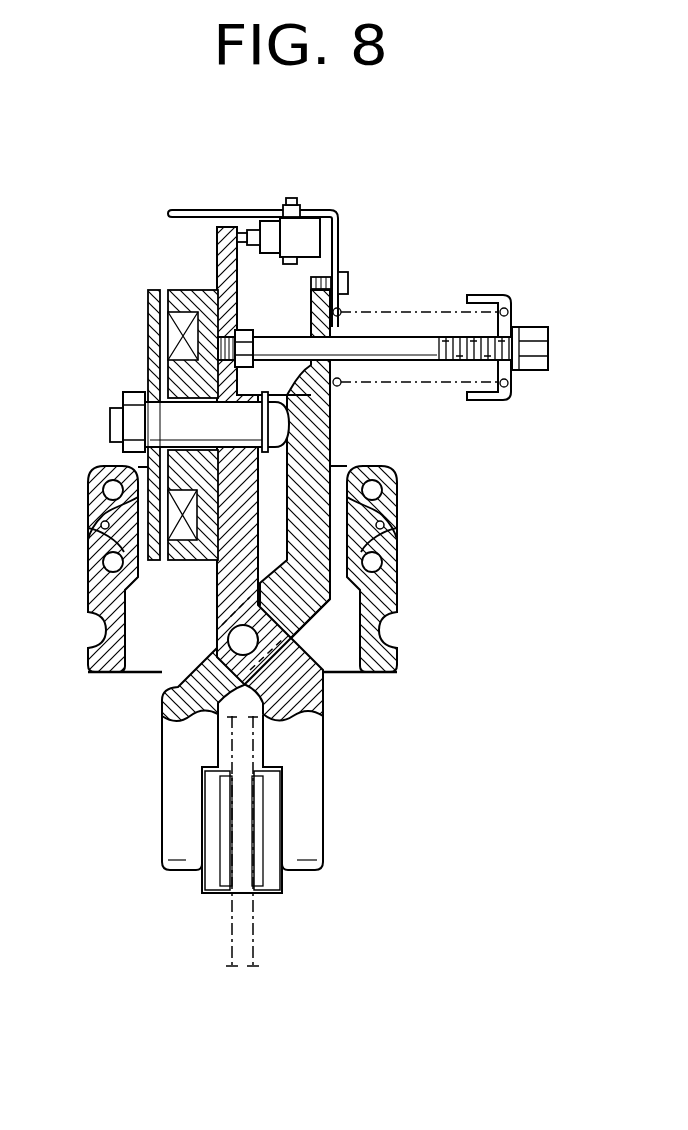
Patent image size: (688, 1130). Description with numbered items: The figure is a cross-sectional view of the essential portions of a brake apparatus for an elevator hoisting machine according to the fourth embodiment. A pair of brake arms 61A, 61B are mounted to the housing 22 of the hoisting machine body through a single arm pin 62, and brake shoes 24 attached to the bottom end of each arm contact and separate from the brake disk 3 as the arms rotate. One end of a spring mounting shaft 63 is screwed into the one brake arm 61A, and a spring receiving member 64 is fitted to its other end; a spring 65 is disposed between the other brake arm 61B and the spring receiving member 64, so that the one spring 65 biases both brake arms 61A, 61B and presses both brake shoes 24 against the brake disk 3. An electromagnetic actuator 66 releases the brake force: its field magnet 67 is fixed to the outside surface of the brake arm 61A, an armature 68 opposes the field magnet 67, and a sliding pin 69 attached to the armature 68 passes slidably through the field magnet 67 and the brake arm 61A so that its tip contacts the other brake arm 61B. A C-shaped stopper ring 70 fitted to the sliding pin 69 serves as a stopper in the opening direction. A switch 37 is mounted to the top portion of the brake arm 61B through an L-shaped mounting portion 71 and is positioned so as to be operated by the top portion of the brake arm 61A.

The brake disk 3 is at (252, 917).
The housing 22 is at (398, 585).
The brake shoes 24 is at (225, 867).
The switch 37 is at (270, 230).
The brake arm 61A is at (327, 800).
The brake arm 61B is at (162, 803).
The arm pin 62 is at (193, 677).
The spring mounting shaft 63 is at (400, 350).
The spring receiving member 64 is at (513, 302).
The spring 65 is at (417, 309).
The electromagnetic actuator 66 is at (165, 284).
The field magnet 67 is at (200, 288).
The armature 68 is at (150, 323).
The sliding pin 69 is at (188, 412).
The C-shaped stopper ring 70 is at (292, 418).
The L-shaped mounting portion 71 is at (340, 226).